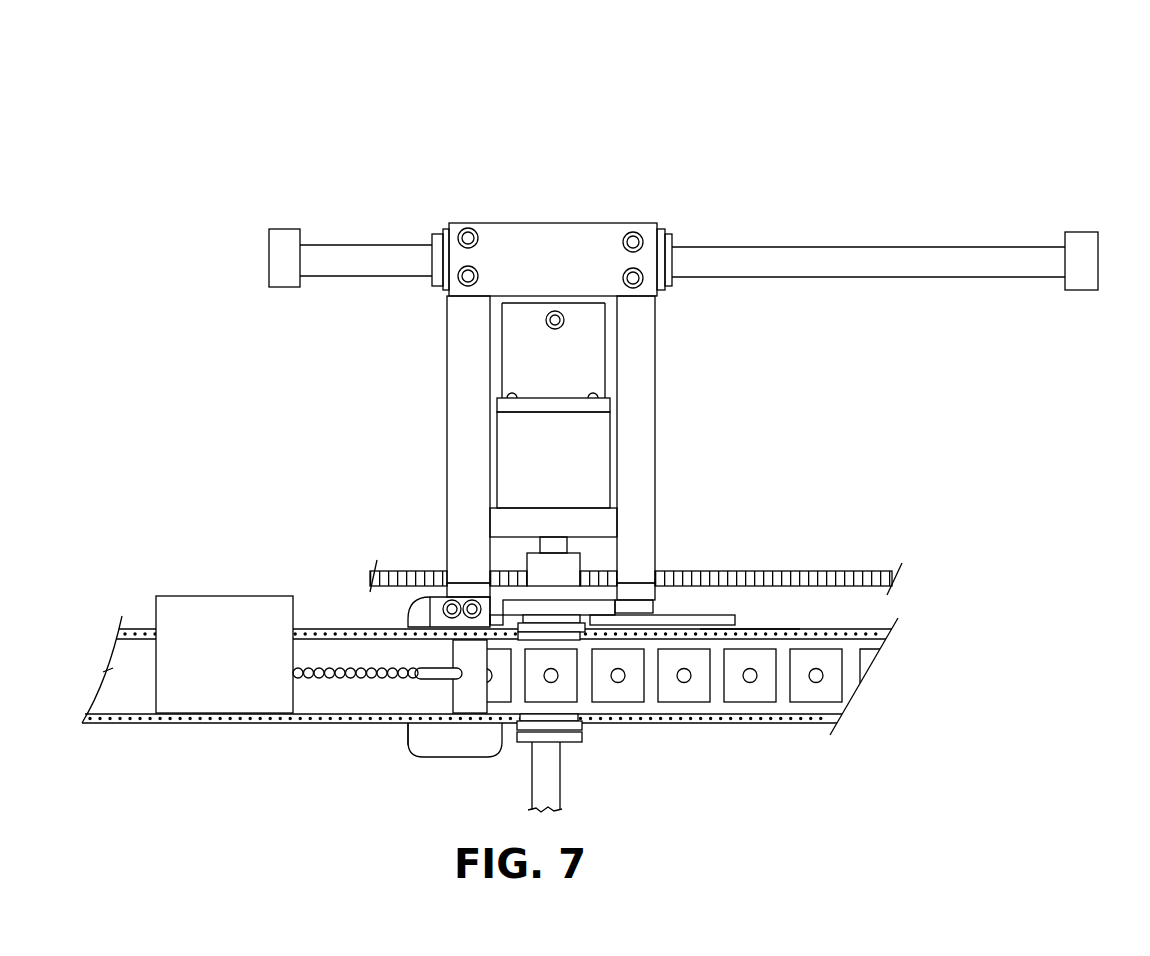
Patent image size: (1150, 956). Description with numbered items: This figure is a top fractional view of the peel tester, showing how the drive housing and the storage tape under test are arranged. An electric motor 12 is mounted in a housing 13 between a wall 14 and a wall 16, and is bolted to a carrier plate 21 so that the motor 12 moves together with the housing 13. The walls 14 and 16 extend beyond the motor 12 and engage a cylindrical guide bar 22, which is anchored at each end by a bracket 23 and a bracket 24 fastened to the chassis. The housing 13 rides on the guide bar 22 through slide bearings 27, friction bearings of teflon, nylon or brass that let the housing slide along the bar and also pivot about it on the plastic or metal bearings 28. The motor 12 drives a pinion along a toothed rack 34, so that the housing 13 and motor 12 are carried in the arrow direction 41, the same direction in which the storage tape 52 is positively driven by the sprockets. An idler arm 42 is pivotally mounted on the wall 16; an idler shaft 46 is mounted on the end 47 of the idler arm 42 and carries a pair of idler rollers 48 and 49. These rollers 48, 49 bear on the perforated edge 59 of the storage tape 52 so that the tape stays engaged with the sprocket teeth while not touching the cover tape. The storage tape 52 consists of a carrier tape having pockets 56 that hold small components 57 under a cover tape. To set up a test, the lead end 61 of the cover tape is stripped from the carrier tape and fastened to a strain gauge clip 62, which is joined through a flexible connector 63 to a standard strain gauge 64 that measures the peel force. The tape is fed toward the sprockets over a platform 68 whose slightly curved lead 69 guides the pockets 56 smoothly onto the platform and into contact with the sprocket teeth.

The electric motor 12 is at (590, 470).
The housing 13 is at (538, 424).
The wall 14 is at (455, 405).
The wall 16 is at (642, 428).
The carrier plate 21 is at (500, 520).
The guide bar 22 is at (850, 255).
The bracket 23 is at (283, 238).
The bracket 24 is at (1082, 260).
The slide bearing 27 is at (661, 232).
The bearing 28 is at (672, 240).
The rack 34 is at (800, 572).
The arrow direction 41 is at (873, 680).
The idler arm 42 is at (707, 617).
The idler shaft 46 is at (560, 780).
The end of idler arm 47 is at (520, 605).
The idler roller 48 is at (580, 622).
The idler roller 49 is at (580, 737).
The storage tape 52 is at (733, 708).
The pocket 56 is at (822, 653).
The component 57 is at (817, 680).
The edge 59 is at (753, 627).
The lead end 61 is at (465, 655).
The strain gauge clip 62 is at (420, 677).
The flexible connector 63 is at (330, 677).
The strain gauge 64 is at (197, 613).
The platform 68 is at (475, 743).
The curved lead 69 is at (408, 742).